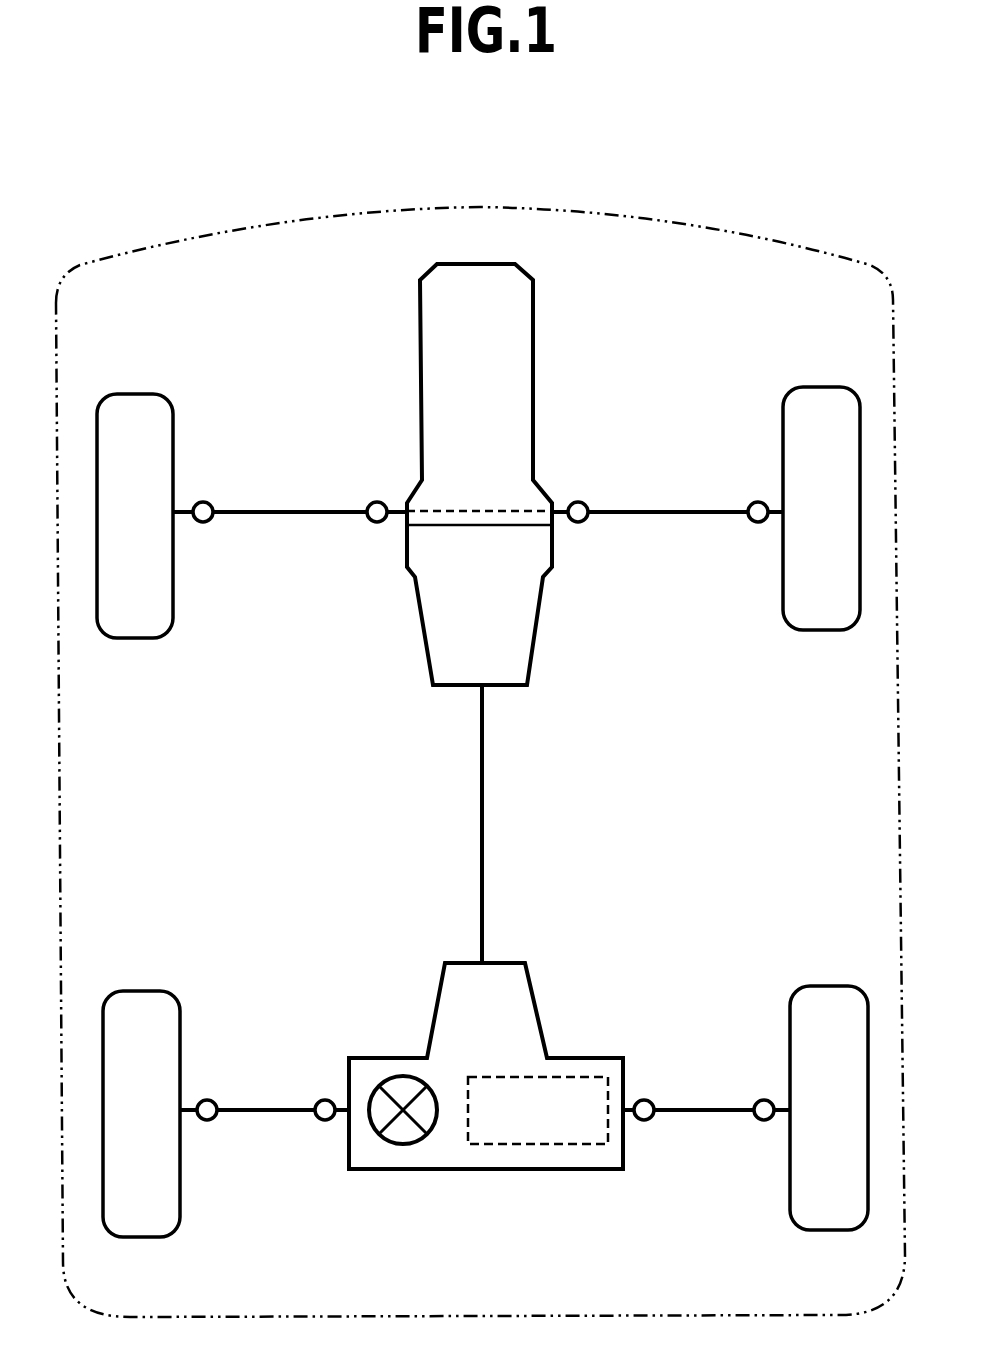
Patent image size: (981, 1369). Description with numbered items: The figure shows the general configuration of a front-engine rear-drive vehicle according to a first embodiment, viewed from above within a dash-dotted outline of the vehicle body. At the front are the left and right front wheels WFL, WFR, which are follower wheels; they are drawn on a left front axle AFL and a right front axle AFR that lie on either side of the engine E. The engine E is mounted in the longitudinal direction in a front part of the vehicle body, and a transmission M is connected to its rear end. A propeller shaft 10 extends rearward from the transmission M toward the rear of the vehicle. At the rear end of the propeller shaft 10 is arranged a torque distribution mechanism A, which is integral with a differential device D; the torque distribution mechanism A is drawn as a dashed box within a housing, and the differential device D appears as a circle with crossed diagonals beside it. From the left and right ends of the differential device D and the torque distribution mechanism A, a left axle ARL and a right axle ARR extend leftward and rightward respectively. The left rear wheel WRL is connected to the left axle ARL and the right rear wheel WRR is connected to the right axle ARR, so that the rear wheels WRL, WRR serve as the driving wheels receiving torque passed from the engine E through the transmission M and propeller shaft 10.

The engine E is at (467, 386).
The transmission M is at (473, 606).
The propeller shaft 10 is at (484, 810).
The torque distribution mechanism A is at (531, 1132).
The differential device D is at (400, 1133).
The left front wheel WFL is at (127, 622).
The right front wheel WFR is at (825, 615).
The left rear wheel WRL is at (137, 1017).
The right rear wheel WRR is at (825, 1012).
The left front axle AFL is at (290, 512).
The right front axle AFR is at (712, 512).
The left axle ARL is at (272, 1112).
The right axle ARR is at (698, 1112).